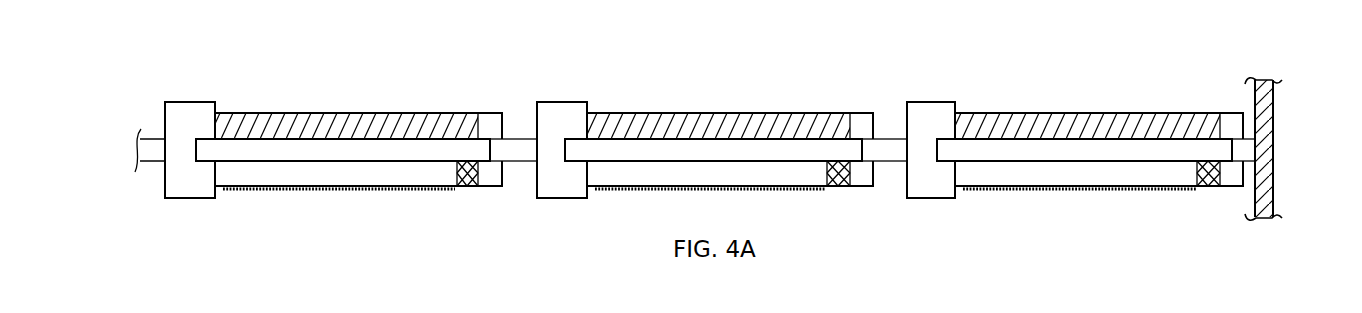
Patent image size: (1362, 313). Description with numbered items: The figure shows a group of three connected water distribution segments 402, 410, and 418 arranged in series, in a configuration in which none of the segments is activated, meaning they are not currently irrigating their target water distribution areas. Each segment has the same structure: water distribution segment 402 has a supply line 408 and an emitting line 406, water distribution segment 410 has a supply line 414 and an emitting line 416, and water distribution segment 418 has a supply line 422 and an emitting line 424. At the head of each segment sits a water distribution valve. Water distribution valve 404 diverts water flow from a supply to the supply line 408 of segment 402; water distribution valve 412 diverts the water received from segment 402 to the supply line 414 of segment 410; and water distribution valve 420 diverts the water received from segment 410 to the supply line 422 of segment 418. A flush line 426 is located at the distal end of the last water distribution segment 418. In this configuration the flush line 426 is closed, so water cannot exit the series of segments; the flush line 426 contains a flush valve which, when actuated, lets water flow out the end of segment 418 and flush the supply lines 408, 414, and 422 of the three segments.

The water distribution segment 402 is at (367, 76).
The water distribution valve 404 is at (192, 102).
The emitting line 406 is at (270, 197).
The supply line 408 is at (235, 113).
The water distribution segment 410 is at (760, 77).
The water distribution valve 412 is at (563, 102).
The supply line 414 is at (613, 113).
The emitting line 416 is at (640, 196).
The water distribution segment 418 is at (1131, 77).
The water distribution valve 420 is at (933, 102).
The supply line 422 is at (983, 113).
The emitting line 424 is at (995, 196).
The flush line 426 is at (1257, 220).